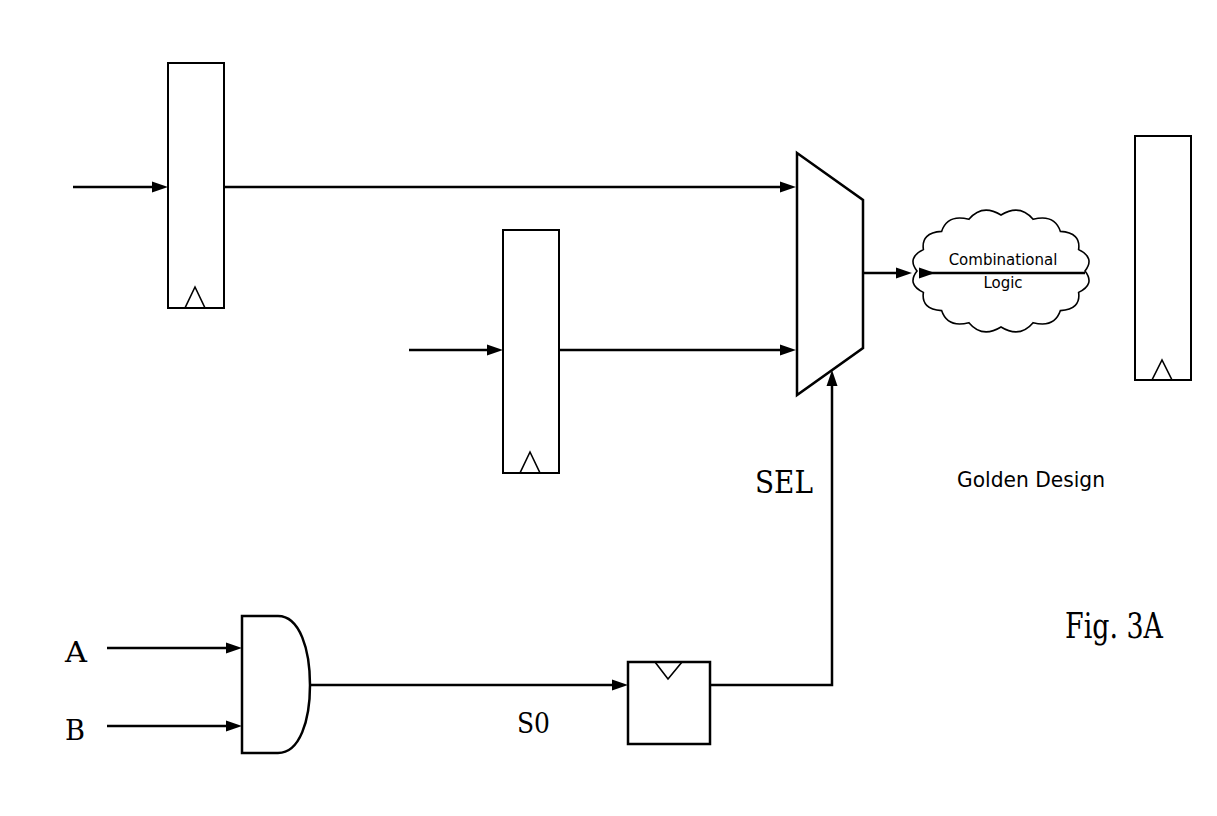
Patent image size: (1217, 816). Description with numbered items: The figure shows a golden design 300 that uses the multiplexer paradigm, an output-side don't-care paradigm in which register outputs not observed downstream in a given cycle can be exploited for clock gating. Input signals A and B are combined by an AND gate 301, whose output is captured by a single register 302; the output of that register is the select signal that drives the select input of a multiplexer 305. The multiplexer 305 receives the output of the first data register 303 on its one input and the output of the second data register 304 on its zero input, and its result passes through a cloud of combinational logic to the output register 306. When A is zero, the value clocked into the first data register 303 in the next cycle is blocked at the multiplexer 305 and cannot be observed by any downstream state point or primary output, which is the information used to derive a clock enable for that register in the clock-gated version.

The golden design 300 is at (936, 75).
The AND gate 301 is at (277, 612).
The single register 302 is at (678, 655).
The register D1 303 is at (208, 60).
The register D0 304 is at (540, 225).
The multiplexer 305 is at (825, 167).
The P1 output register 306 is at (1173, 132).